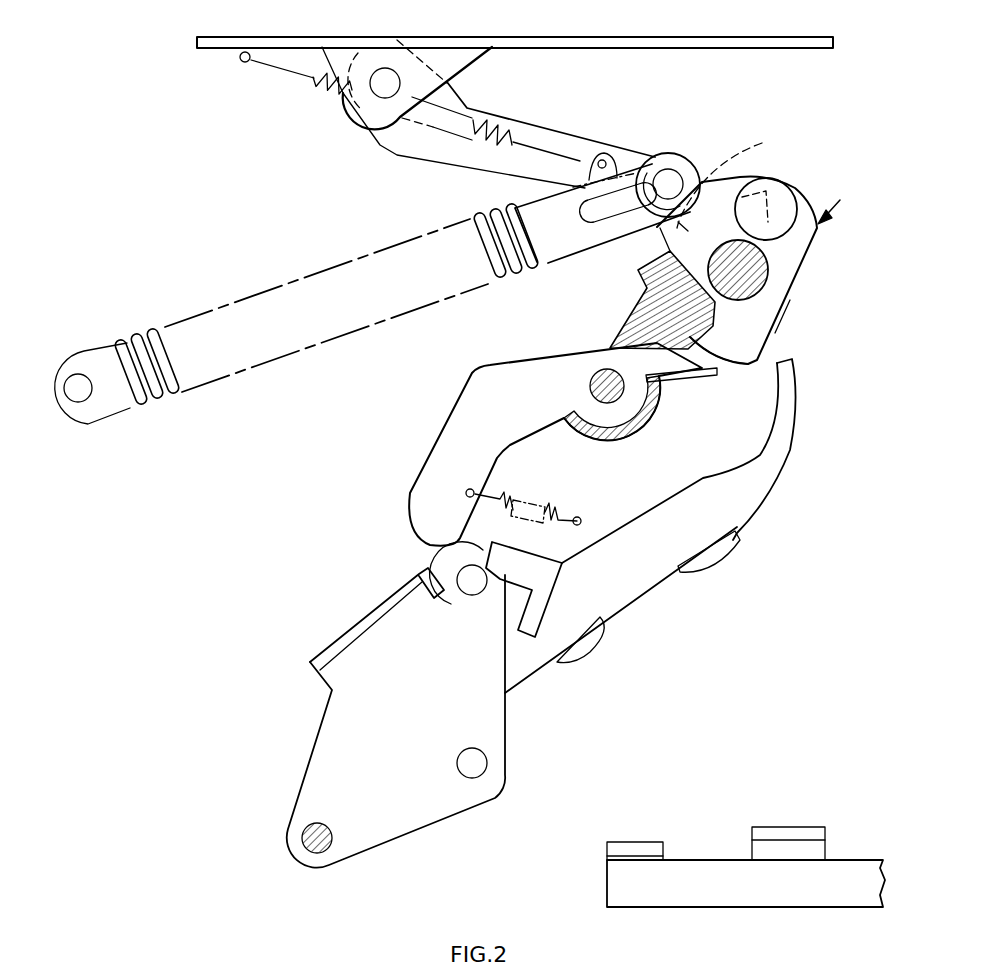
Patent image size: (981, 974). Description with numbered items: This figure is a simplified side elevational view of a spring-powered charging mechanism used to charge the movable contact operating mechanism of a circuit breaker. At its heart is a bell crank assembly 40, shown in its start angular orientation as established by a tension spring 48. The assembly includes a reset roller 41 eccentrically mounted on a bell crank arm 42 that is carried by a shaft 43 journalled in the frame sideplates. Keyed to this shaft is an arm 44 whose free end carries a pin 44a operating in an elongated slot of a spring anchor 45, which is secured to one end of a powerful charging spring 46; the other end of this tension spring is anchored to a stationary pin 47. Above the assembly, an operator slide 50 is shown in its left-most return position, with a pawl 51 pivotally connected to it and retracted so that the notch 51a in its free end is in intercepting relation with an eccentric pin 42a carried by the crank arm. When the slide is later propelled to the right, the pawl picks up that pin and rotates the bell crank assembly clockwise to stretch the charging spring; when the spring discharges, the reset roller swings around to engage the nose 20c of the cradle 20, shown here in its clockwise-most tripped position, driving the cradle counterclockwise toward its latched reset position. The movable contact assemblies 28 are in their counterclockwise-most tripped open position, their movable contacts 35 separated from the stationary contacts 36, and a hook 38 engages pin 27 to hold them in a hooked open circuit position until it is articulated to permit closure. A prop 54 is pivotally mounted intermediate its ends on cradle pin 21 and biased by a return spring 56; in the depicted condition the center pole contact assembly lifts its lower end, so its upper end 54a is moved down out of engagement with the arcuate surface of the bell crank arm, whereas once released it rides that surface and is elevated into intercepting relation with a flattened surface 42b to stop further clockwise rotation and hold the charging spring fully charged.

The cradle 20 is at (647, 292).
The nose 20c is at (765, 336).
The cradle pin 21 is at (603, 377).
The pin 27 is at (467, 573).
The movable contact assemblies 28 is at (337, 730).
The movable contacts 35 is at (697, 573).
The stationary contacts 36 is at (767, 832).
The hook 38 is at (550, 578).
The bell crank assembly 40 is at (841, 200).
The reset roller 41 is at (785, 197).
The bell crank arm 42 is at (805, 237).
The eccentric pin 42a is at (739, 179).
The flattened surface 42b is at (780, 305).
The shaft 43 is at (757, 283).
The arm 44 is at (708, 197).
The pin 44a is at (665, 173).
The spring anchor 45 is at (577, 250).
The charging spring 46 is at (402, 318).
The stationary pin 47 is at (77, 380).
The tension spring 48 is at (317, 97).
The operator slide 50 is at (590, 37).
The pawl 51 is at (568, 133).
The notch 51a is at (701, 237).
The prop 54 is at (528, 410).
The upper end 54a is at (683, 380).
The return spring 56 is at (530, 498).